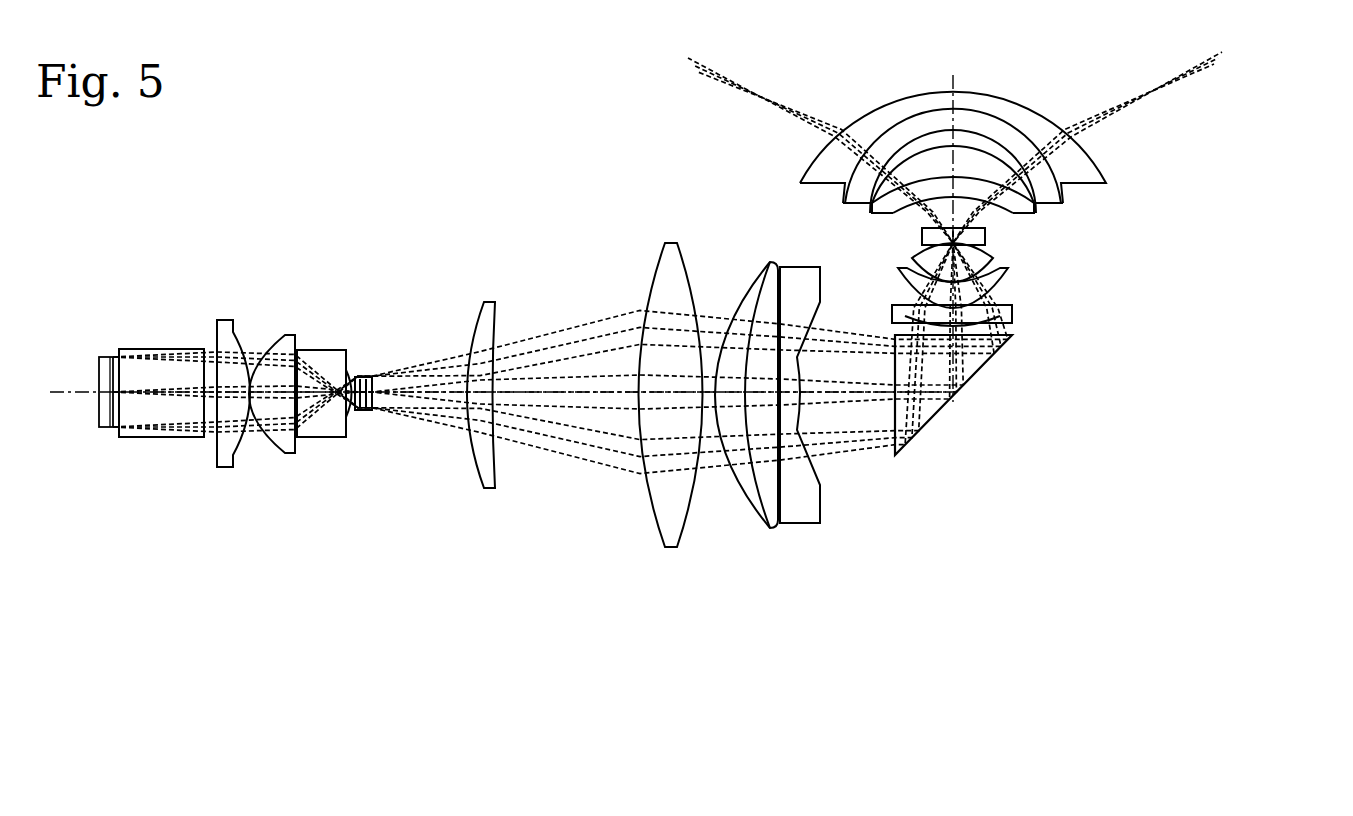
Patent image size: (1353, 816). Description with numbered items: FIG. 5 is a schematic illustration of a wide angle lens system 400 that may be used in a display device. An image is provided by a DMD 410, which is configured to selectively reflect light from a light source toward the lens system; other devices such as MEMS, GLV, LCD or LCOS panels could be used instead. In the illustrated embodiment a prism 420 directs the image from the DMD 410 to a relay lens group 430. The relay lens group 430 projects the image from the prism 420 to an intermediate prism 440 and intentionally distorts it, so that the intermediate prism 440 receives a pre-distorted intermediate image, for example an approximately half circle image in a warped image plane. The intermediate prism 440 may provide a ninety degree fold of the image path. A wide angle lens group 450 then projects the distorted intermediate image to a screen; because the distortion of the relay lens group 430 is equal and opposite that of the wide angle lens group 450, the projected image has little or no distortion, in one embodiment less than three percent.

The illumination system 400 is at (170, 241).
The DMD 410 is at (107, 428).
The prism 420 is at (192, 349).
The relay lens group 430 is at (832, 260).
The intermediate prism 440 is at (968, 374).
The wide angle lens group 450 is at (1213, 28).